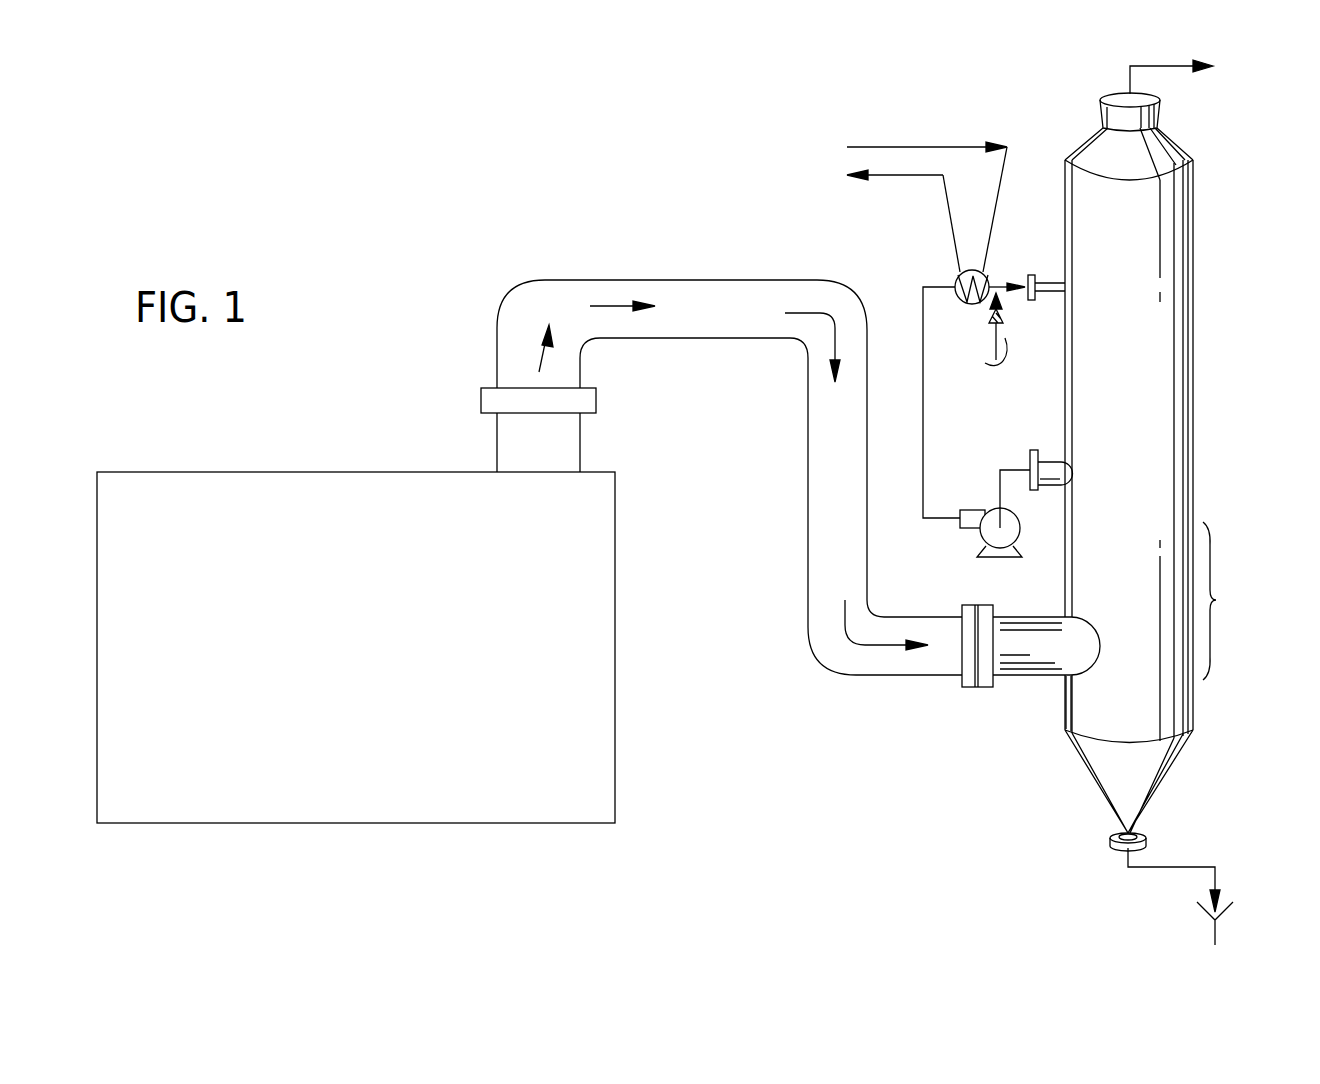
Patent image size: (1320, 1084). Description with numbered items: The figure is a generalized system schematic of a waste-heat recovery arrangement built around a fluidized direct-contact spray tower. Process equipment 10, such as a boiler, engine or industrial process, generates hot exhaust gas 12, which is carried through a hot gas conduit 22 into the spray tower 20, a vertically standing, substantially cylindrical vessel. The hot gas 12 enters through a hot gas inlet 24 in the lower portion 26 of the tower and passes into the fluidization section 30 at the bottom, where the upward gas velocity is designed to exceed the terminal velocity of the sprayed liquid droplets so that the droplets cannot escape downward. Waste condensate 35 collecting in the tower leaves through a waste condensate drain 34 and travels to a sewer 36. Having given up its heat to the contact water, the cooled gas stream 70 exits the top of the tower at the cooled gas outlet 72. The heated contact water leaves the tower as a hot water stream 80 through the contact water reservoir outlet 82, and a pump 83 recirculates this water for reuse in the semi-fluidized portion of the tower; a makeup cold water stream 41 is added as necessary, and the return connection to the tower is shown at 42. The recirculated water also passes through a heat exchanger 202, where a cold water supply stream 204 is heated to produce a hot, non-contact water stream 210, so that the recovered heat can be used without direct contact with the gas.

The process equipment 10 is at (537, 622).
The hot exhaust gas 12 is at (836, 348).
The spray tower 20 is at (1170, 260).
The hot gas conduit 22 is at (697, 280).
The hot gas inlet 24 is at (1027, 677).
The lower portion 26 is at (1063, 708).
The fluidization section 30 is at (1223, 601).
The waste condensate drain 34 is at (1117, 838).
The waste condensate 35 is at (1175, 865).
The sewer 36 is at (1213, 932).
The makeup cold water stream 41 is at (1002, 340).
The nozzle flange 42 is at (1050, 280).
The cooled gas stream 70 is at (1165, 68).
The cooled gas outlet 72 is at (1097, 110).
The hot water stream 80 is at (1018, 470).
The contact water reservoir outlet 82 is at (1048, 455).
The pump 83 is at (988, 557).
The heat exchanger 202 is at (955, 281).
The cold water supply stream 204 is at (942, 147).
The hot non-contact water stream 210 is at (907, 177).